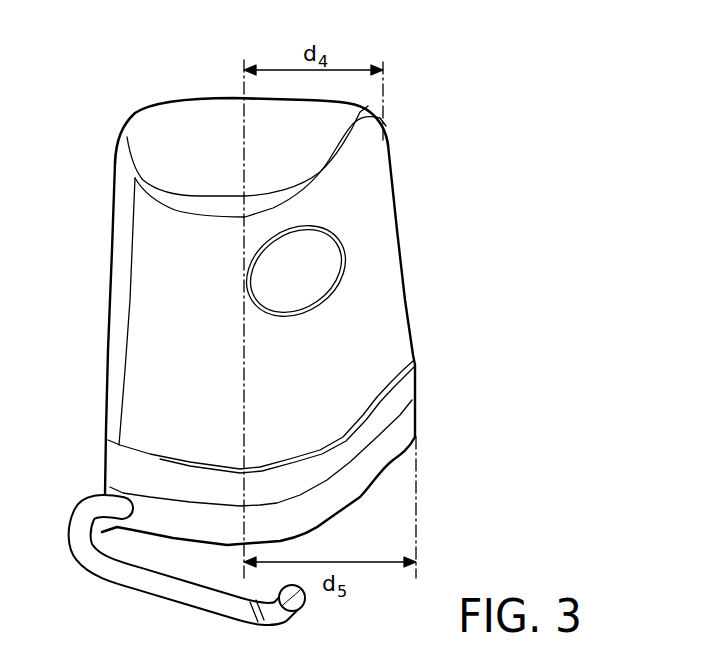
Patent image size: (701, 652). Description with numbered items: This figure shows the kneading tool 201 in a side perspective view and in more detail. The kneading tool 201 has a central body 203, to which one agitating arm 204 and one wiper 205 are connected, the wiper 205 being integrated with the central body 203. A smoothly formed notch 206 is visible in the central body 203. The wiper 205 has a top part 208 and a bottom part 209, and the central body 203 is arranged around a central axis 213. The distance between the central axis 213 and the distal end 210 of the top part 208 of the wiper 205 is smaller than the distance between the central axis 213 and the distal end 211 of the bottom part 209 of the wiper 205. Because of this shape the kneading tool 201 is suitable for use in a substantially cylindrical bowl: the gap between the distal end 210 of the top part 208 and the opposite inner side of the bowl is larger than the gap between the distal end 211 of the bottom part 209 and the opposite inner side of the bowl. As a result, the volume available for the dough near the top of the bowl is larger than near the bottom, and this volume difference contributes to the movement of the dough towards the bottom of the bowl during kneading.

The kneading tool 201 is at (143, 318).
The central body 203 is at (152, 142).
The agitating arm 204 is at (140, 582).
The wiper 205 is at (347, 110).
The notch 206 is at (302, 302).
The top part of the wiper 208 is at (347, 150).
The bottom part of the wiper 209 is at (407, 428).
The distal end of the top part 210 is at (384, 127).
The distal end of the bottom part 211 is at (407, 432).
The central axis 213 is at (243, 78).